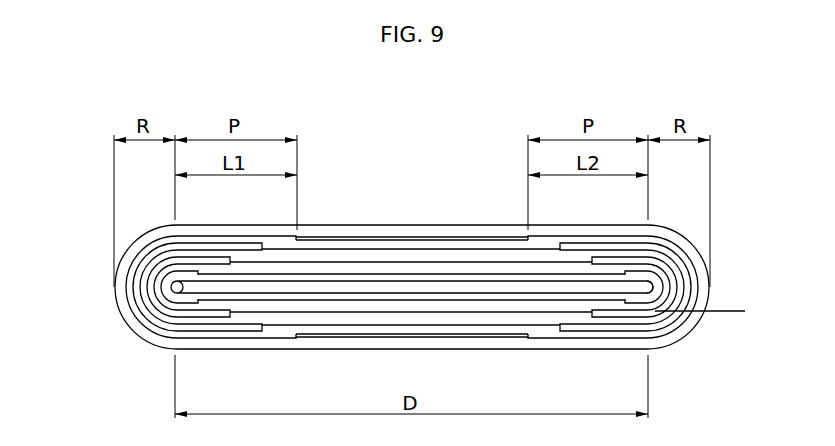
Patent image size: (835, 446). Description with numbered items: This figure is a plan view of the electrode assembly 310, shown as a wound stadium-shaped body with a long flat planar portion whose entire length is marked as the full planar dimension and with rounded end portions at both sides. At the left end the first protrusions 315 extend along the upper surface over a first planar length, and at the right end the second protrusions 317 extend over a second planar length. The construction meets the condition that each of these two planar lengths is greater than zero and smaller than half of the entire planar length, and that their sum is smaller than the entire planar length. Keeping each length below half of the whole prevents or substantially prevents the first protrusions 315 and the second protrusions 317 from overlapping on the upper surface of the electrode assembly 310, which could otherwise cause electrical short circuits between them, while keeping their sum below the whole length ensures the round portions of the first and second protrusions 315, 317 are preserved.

The electrode assembly 310 is at (760, 110).
The first protrusion 315 is at (126, 280).
The second protrusion 317 is at (693, 281).